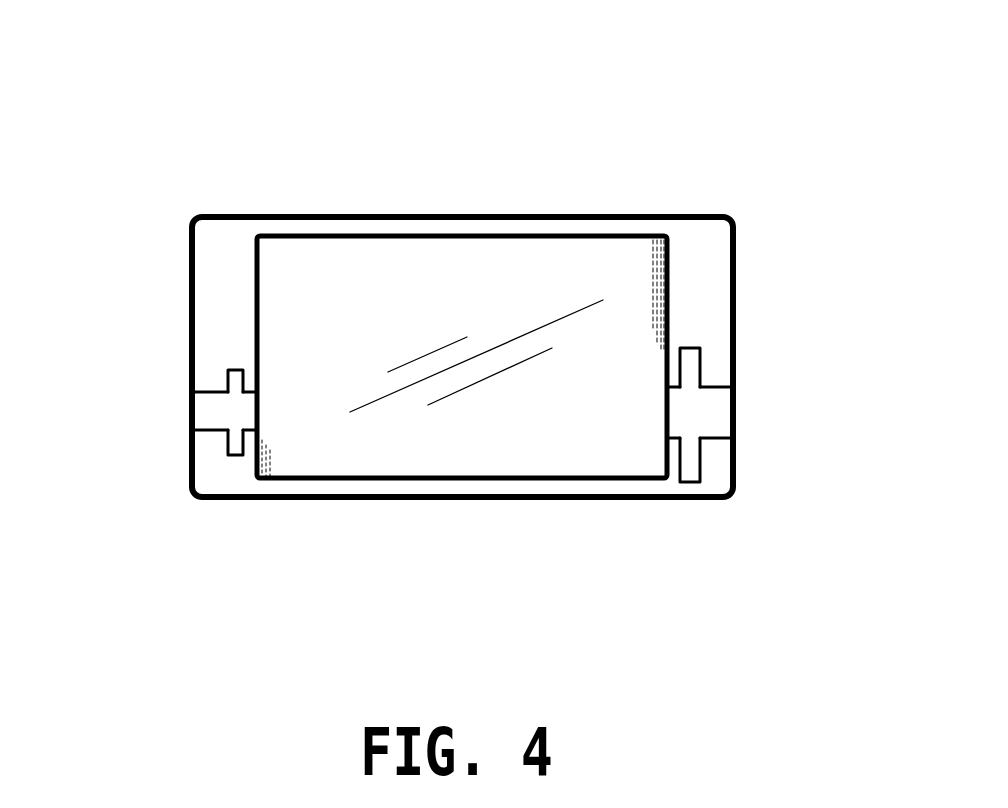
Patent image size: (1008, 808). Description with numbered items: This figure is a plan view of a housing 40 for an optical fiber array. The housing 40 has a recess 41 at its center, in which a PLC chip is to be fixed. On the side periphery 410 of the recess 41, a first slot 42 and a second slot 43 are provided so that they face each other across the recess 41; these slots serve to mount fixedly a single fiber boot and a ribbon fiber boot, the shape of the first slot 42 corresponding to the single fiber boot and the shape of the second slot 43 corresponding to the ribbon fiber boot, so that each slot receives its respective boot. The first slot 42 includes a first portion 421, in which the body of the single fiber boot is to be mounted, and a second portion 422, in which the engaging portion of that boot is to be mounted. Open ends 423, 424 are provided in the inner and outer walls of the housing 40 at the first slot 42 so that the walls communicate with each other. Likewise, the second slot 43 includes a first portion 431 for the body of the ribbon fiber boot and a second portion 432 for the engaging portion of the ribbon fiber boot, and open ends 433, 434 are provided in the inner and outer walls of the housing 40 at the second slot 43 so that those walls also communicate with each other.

The housing 40 is at (447, 309).
The recess 41 is at (507, 315).
The side periphery 410 is at (220, 298).
The first slot 42 is at (199, 349).
The first portion 421 is at (210, 410).
The second portion 422 is at (235, 382).
The open end 423 is at (192, 408).
The open end 424 is at (260, 412).
The second slot 43 is at (708, 445).
The first portion 431 is at (710, 403).
The second portion 432 is at (688, 365).
The open end 433 is at (790, 412).
The open end 434 is at (665, 412).